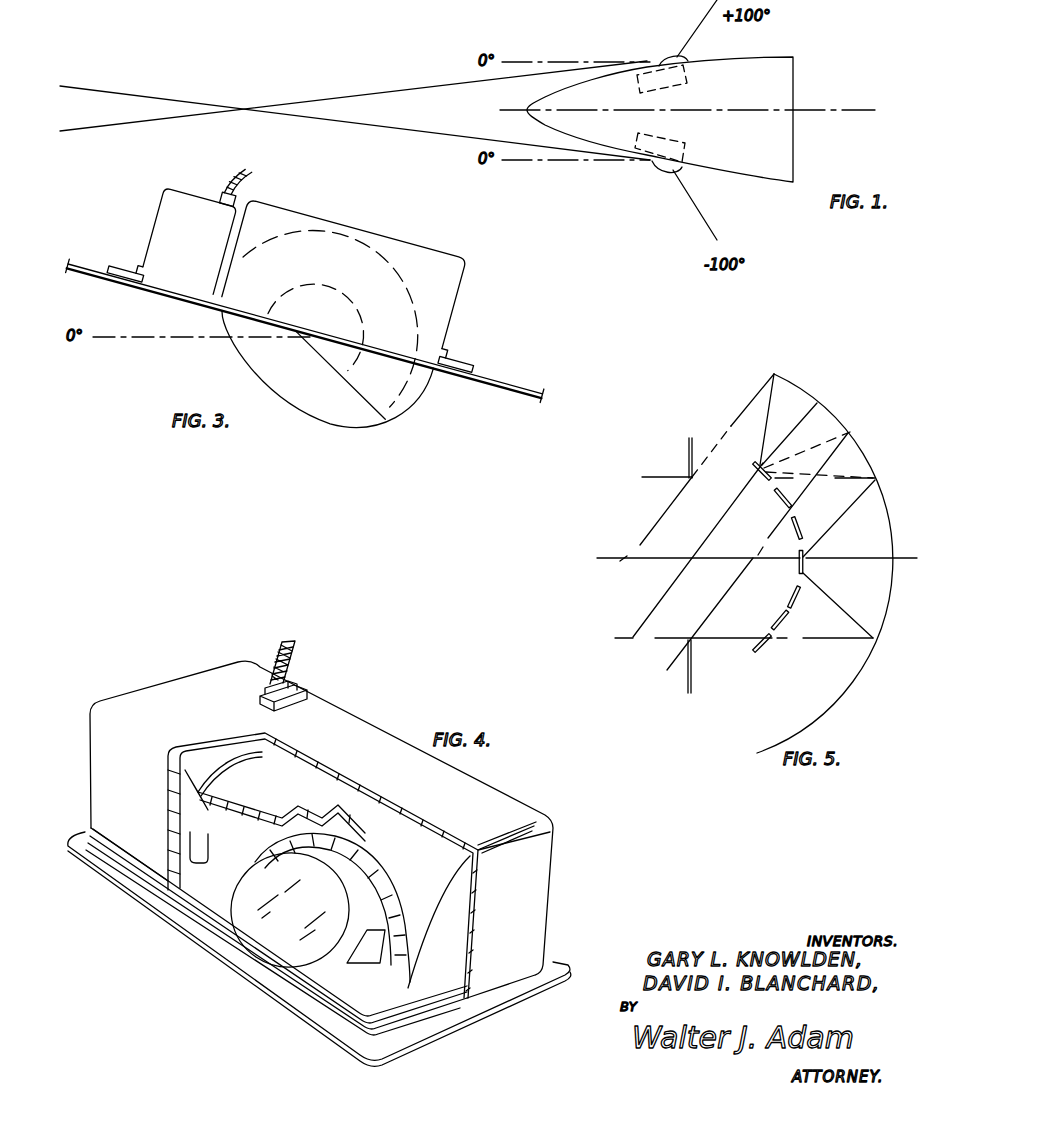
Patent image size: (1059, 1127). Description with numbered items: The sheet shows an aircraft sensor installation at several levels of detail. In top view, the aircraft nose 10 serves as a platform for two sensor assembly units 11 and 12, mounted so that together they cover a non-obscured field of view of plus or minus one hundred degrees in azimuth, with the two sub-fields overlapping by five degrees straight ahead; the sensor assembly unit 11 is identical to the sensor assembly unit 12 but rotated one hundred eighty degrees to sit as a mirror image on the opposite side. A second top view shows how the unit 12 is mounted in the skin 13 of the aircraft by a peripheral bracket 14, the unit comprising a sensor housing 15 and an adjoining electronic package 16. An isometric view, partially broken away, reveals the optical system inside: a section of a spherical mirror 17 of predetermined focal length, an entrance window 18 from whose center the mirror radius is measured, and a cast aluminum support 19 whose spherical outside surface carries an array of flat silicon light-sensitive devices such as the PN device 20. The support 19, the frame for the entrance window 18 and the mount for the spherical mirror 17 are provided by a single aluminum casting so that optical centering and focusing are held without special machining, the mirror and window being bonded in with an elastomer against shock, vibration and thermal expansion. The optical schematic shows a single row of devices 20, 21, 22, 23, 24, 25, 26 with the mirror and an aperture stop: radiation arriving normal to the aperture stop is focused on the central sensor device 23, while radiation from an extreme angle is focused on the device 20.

In FIG. 1, the aircraft nose 10 is at (767, 108).
In FIG. 1, the sensor assembly unit 11 is at (664, 60).
In FIG. 1, the sensor assembly unit 12 is at (654, 163).
In FIG. 3, the sensor assembly unit 12 is at (390, 421).
In FIG. 3, the skin 13 is at (515, 385).
In FIG. 3, the peripheral bracket 14 is at (455, 363).
In FIG. 3, the sensor housing 15 is at (447, 268).
In FIG. 4, the sensor housing 15 is at (507, 880).
In FIG. 3, the electronic package 16 is at (187, 199).
In FIG. 4, the electronic package 16 is at (132, 827).
In FIG. 4, the spherical mirror 17 is at (358, 1034).
In FIG. 4, the entrance window 18 is at (273, 927).
In FIG. 4, the cast aluminum support 19 is at (330, 1008).
In FIG. 5, the PN device 20 is at (753, 470).
In FIG. 4, the PN device 20 is at (293, 812).
In FIG. 5, the sensor device 21 is at (773, 510).
In FIG. 5, the sensor device 22 is at (798, 520).
In FIG. 5, the sensor device 23 is at (798, 560).
In FIG. 5, the sensor device 24 is at (798, 598).
In FIG. 5, the sensor device 25 is at (782, 618).
In FIG. 5, the sensor device 26 is at (767, 652).
In FIG. 4, the sensor device 26 is at (380, 925).